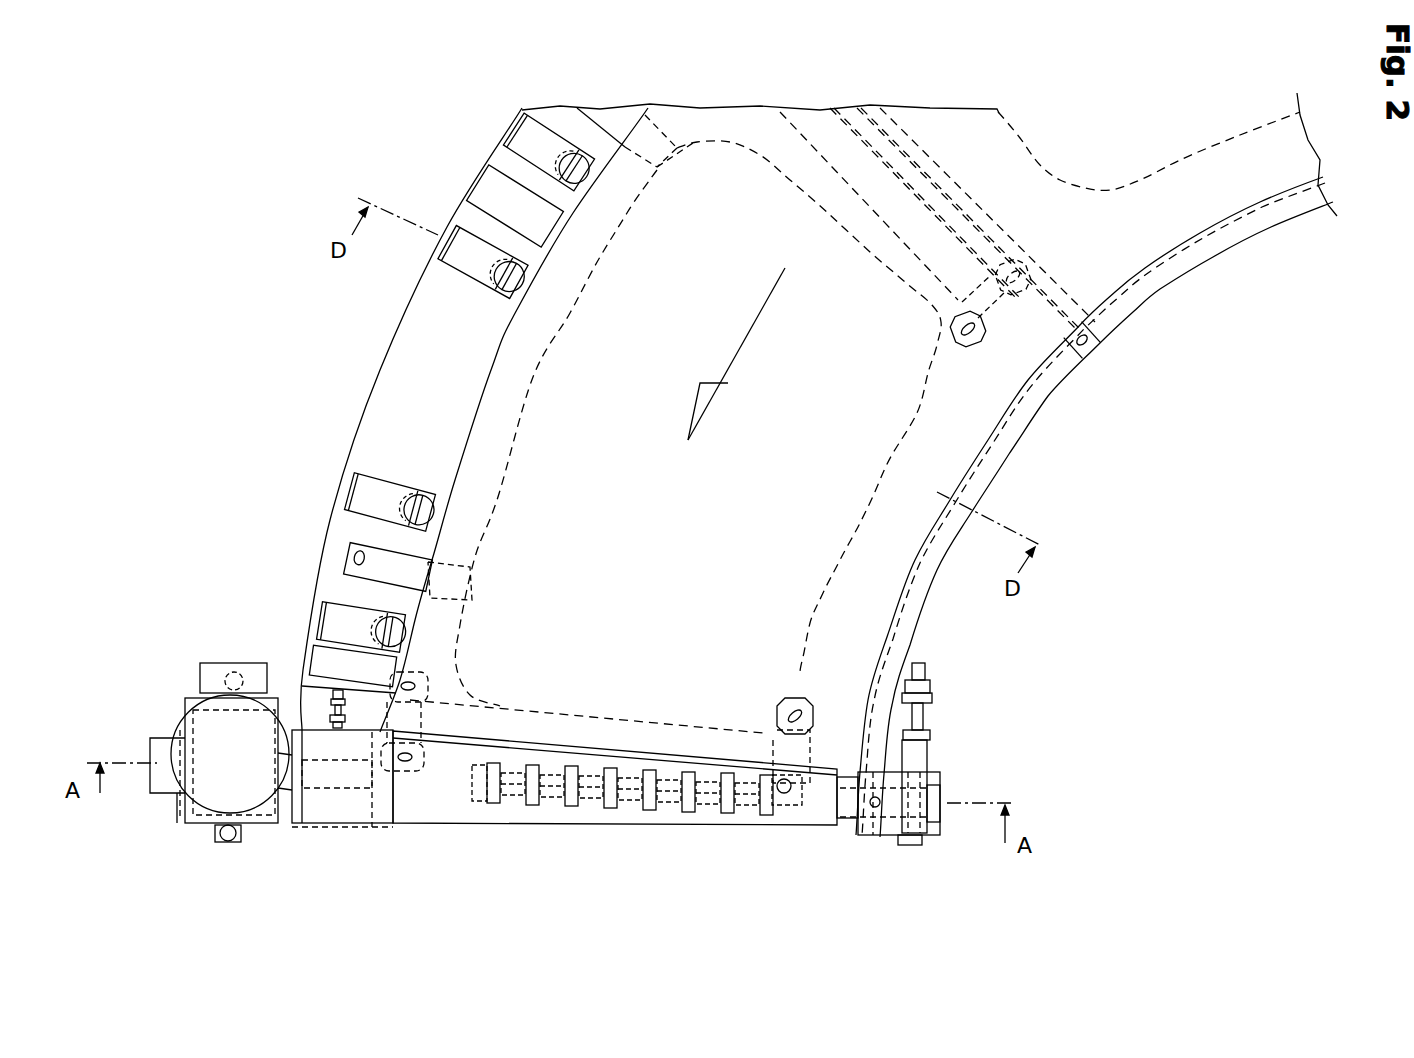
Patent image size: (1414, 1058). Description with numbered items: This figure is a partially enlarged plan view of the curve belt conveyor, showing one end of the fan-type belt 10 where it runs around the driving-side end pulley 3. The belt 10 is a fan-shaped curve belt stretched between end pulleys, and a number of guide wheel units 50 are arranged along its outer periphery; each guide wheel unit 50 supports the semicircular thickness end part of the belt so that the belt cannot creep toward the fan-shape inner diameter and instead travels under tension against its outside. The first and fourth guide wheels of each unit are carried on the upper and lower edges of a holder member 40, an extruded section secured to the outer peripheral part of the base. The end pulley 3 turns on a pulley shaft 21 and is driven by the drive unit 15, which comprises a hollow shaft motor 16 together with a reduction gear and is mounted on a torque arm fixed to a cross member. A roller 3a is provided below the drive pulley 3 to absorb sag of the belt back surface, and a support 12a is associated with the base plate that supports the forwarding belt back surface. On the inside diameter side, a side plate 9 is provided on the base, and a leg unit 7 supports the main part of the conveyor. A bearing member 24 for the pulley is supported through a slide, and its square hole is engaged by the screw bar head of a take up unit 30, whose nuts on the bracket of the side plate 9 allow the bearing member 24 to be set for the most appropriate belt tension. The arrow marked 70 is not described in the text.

The end pulley 3 is at (447, 800).
The roller 3a is at (652, 812).
The leg unit 7 is at (955, 305).
The side plate 9 is at (1020, 436).
The fan-type belt 10 is at (657, 343).
The support 12a is at (350, 563).
The drive unit 15 is at (213, 645).
The motor 16 is at (210, 790).
The pulley shaft 21 is at (333, 785).
The bearing member 24 is at (931, 815).
The take up unit 30 is at (950, 697).
The holder member 40 is at (453, 420).
The guide wheel unit 50 is at (590, 188).
The withdrawal direction 70 is at (628, 838).